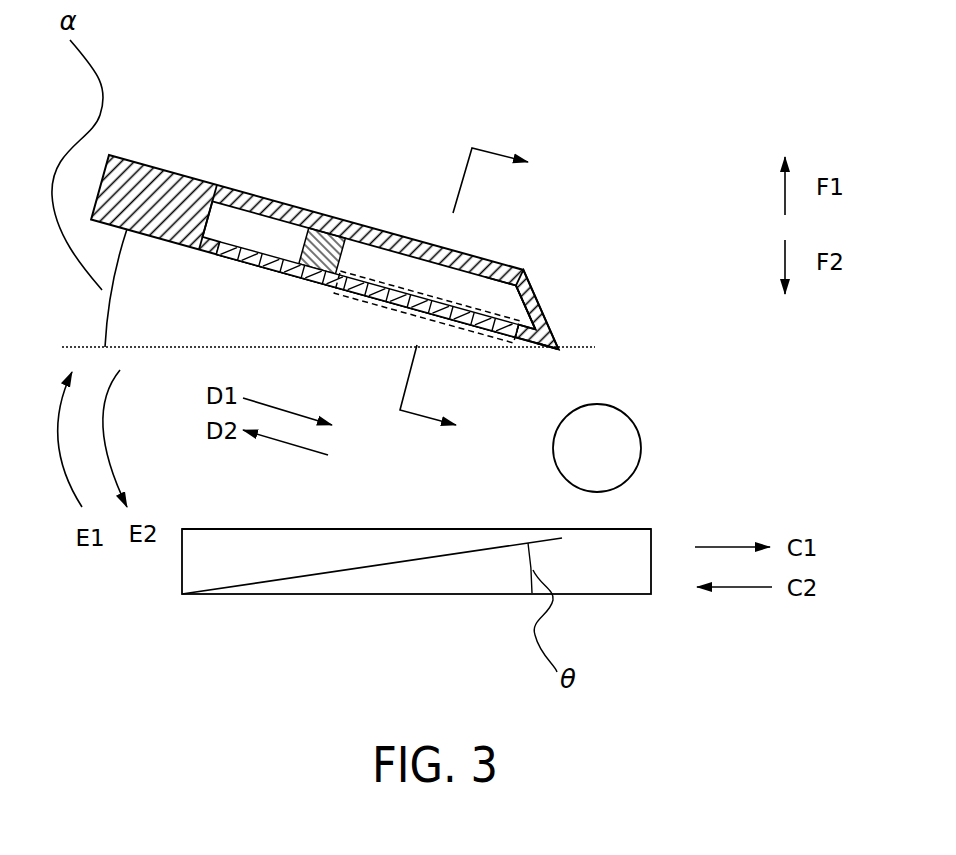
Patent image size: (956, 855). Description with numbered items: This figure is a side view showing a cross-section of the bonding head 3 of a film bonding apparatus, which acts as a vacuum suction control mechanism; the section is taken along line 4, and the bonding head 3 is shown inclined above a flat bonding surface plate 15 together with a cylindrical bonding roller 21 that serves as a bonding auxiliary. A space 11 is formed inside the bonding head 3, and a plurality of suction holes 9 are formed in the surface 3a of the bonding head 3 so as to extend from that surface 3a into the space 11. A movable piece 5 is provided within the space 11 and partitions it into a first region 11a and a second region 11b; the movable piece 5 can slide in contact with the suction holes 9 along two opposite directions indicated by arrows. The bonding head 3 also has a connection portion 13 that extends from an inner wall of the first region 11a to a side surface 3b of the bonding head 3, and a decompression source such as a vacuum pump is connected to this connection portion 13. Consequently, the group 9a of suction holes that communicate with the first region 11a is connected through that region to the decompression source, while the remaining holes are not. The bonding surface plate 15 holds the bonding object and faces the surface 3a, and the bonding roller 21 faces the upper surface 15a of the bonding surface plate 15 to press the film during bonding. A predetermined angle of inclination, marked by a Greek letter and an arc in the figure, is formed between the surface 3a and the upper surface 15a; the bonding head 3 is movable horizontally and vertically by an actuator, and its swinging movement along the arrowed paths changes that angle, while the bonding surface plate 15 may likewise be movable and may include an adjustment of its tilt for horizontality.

The bonding head 3 is at (145, 173).
The surface of the bonding head 3a is at (528, 348).
The side surface of the bonding head 3b is at (531, 303).
The section line IV-IV 4 is at (464, 287).
The movable piece 5 is at (332, 247).
The suction holes 9 is at (243, 262).
The group of suction holes 9a is at (490, 337).
The space 11 is at (412, 237).
The first region 11a is at (500, 290).
The second region 11b is at (222, 213).
The connection portion 13 is at (515, 318).
The bonding surface plate 15 is at (187, 562).
The upper surface of the bonding surface plate 15a is at (328, 527).
The bonding roller 21 is at (590, 470).